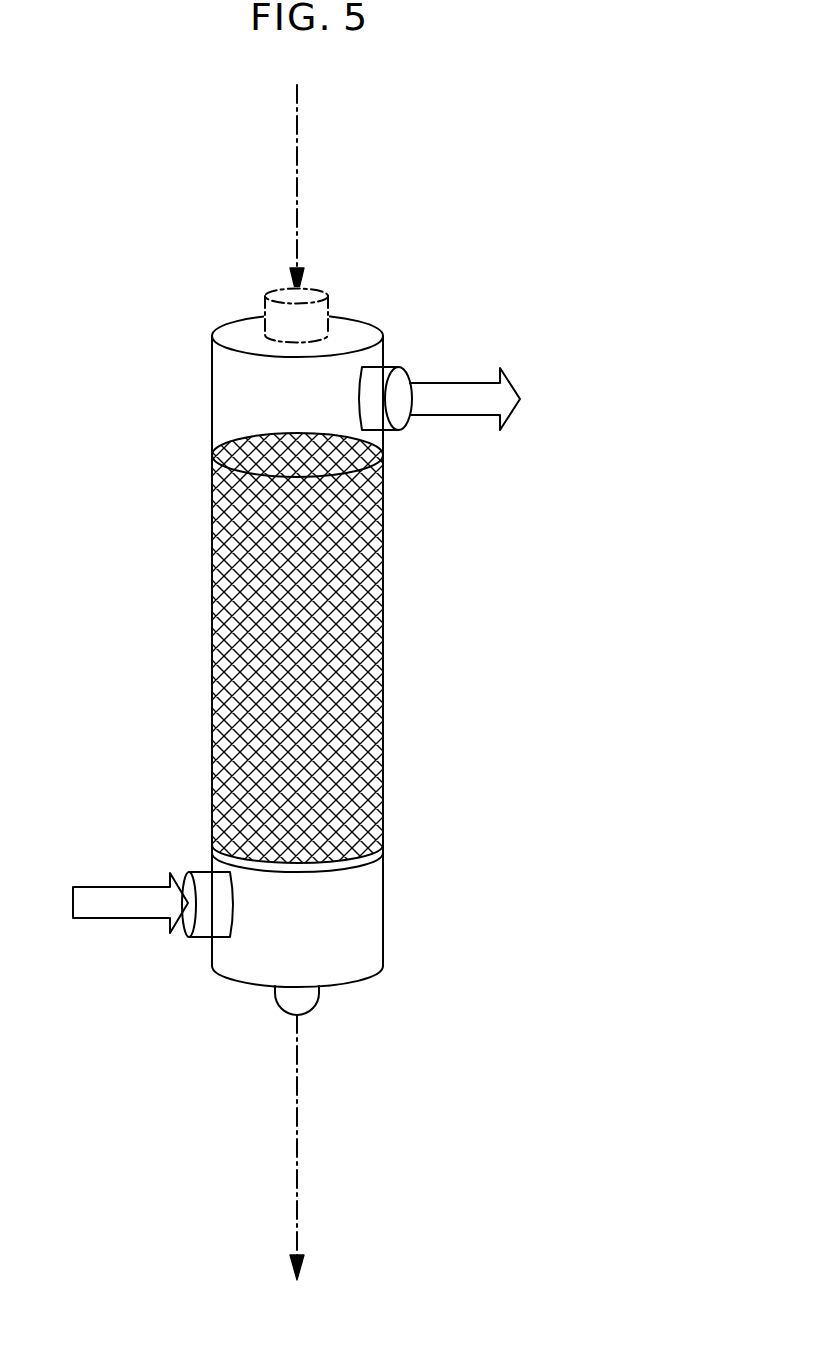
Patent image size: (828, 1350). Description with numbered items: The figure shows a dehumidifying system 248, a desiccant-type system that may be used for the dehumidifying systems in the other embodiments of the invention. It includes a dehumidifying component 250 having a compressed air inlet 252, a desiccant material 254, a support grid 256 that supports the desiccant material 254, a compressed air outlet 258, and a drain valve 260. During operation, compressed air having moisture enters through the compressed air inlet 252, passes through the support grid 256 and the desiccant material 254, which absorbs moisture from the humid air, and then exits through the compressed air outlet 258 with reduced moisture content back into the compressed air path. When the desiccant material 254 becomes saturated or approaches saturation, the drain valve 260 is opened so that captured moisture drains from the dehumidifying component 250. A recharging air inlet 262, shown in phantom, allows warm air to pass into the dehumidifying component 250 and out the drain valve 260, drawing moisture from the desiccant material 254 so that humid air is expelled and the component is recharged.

The dehumidifying system 248 is at (532, 104).
The dehumidifying component 250 is at (383, 905).
The compressed air inlet 252 is at (203, 940).
The desiccant material 254 is at (320, 612).
The support grid 256 is at (298, 873).
The compressed air outlet 258 is at (395, 367).
The drain valve 260 is at (320, 1002).
The recharging air inlet 262 is at (263, 300).